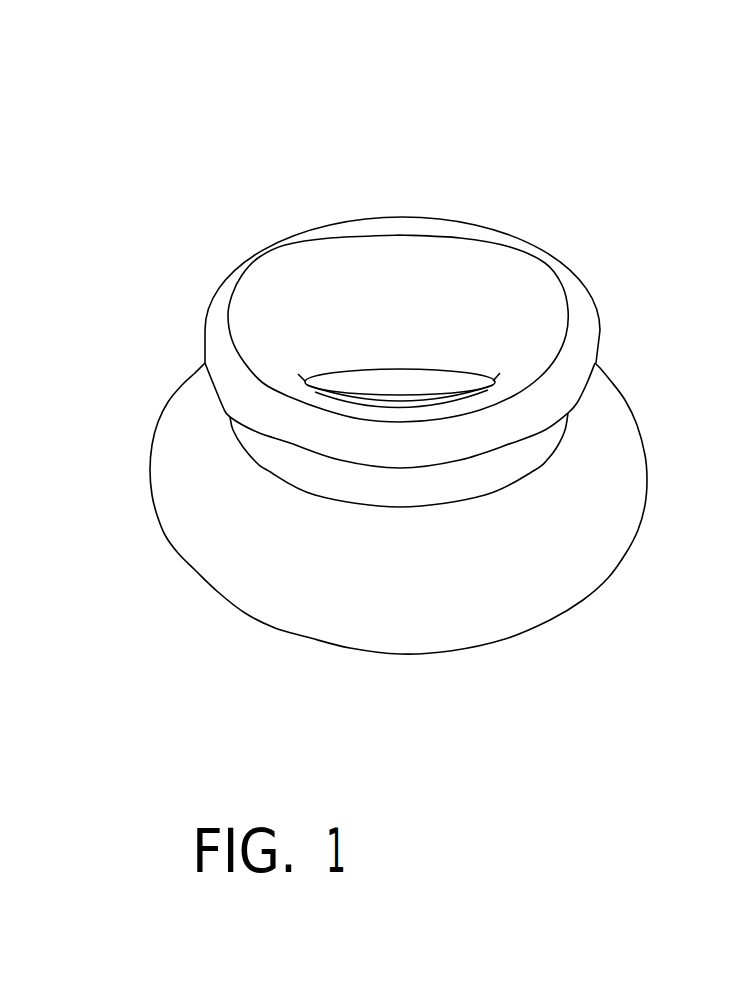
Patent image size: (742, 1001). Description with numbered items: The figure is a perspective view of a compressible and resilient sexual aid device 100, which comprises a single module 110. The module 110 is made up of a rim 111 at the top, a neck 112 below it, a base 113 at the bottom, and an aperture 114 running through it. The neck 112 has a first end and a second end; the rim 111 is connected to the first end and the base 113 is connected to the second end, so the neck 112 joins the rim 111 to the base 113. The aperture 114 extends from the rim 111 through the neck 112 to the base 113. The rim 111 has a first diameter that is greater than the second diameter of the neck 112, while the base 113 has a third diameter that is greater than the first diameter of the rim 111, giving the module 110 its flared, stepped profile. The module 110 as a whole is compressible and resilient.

The compressible and resilient sexual aid device 100 is at (243, 155).
The module 110 is at (522, 572).
The rim 111 is at (578, 325).
The neck 112 is at (277, 465).
The base 113 is at (213, 513).
The aperture 114 is at (389, 390).